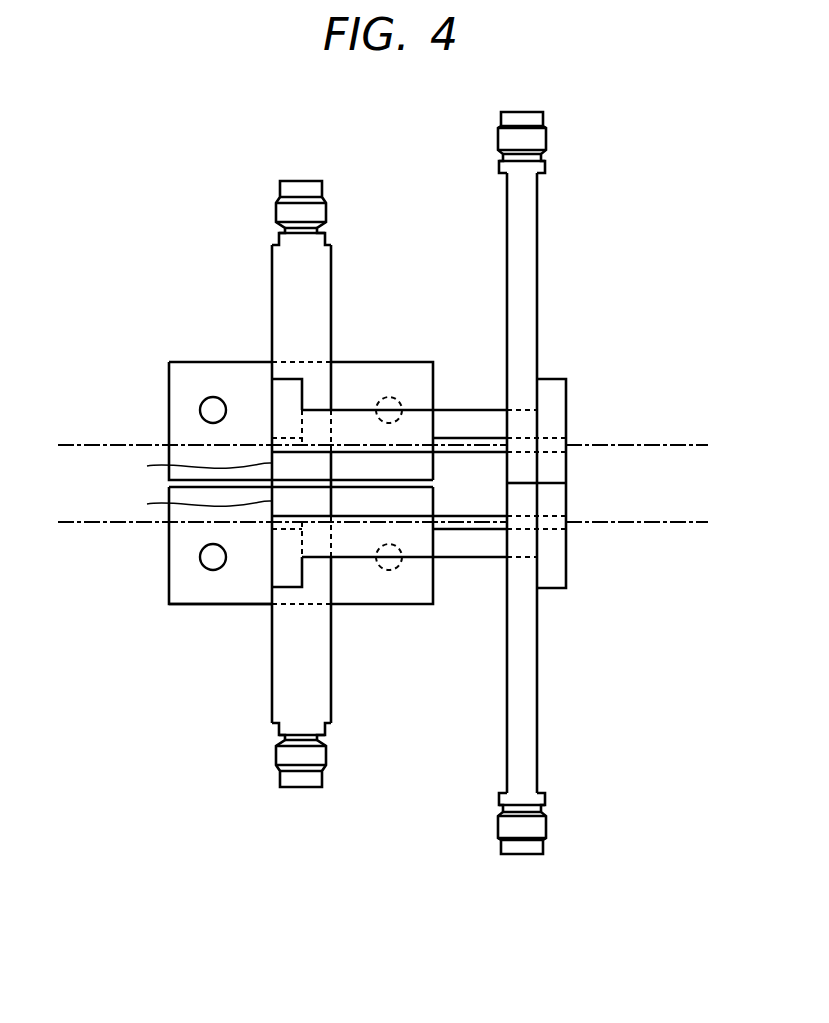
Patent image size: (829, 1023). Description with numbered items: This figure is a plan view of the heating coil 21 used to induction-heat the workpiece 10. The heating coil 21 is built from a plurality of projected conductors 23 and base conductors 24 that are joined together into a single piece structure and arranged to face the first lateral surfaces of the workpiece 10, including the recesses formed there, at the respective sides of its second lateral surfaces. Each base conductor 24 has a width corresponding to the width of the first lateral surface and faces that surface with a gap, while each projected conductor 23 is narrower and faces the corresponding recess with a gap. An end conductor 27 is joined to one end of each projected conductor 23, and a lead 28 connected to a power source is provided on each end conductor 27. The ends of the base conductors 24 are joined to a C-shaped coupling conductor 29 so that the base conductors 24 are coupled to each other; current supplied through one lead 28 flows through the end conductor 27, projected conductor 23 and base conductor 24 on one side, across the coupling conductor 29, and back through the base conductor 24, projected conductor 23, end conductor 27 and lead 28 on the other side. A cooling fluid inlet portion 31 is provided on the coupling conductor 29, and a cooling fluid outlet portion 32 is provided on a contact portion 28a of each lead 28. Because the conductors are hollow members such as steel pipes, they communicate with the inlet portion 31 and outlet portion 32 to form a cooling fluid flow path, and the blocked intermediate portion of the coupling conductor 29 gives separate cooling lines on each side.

The workpiece 10 is at (638, 445).
The heating coil 21 is at (595, 181).
The projected conductor 23 is at (354, 410).
The base conductor 24 is at (472, 410).
The end conductor 27 is at (194, 486).
The lead 28 is at (272, 568).
The contact portion 28a is at (197, 604).
The coupling conductor 29 is at (566, 474).
The cooling fluid inlet portion 31 is at (537, 224).
The cooling fluid outlet portion 32 is at (272, 285).